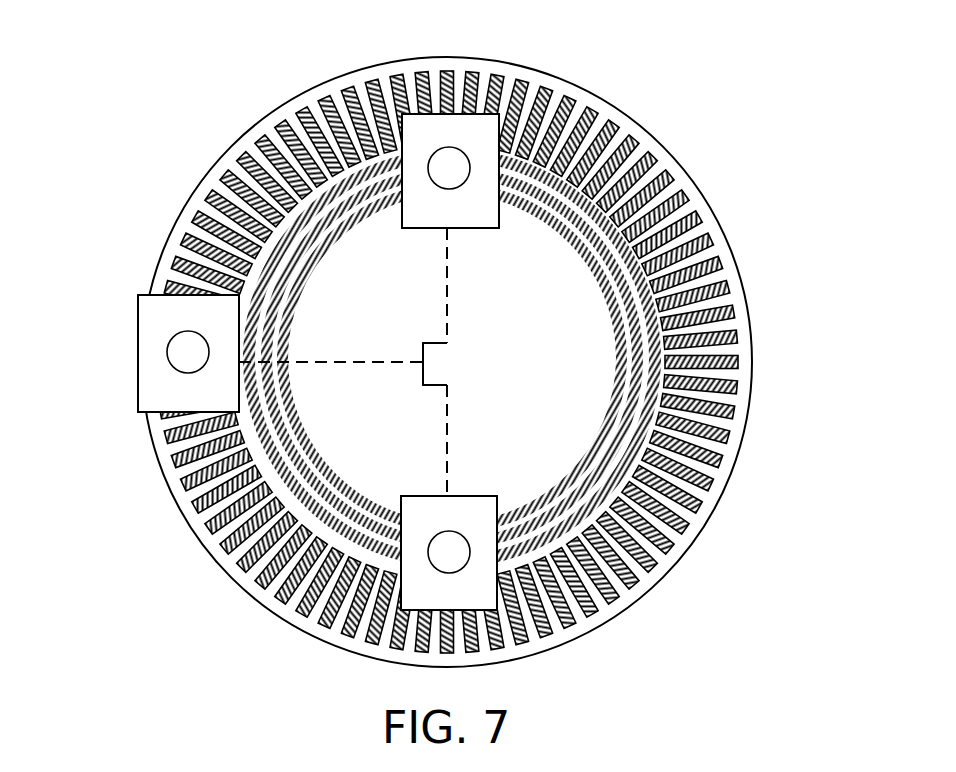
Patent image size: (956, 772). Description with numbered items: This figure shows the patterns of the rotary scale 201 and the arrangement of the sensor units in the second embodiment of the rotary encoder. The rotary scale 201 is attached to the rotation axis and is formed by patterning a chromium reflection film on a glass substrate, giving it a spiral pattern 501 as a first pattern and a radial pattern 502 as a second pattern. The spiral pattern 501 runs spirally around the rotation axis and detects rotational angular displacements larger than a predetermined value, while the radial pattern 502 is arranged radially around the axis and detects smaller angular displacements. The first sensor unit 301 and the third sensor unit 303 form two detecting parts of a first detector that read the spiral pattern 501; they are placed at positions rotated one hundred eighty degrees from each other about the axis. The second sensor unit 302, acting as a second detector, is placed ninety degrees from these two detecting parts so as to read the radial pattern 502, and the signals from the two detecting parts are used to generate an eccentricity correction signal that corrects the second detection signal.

The rotary scale 201 is at (193, 187).
The radial pattern 502 is at (698, 215).
The spiral pattern 501 is at (347, 232).
The first sensor unit 301 is at (445, 497).
The second sensor unit 302 is at (137, 397).
The third sensor unit 303 is at (450, 115).